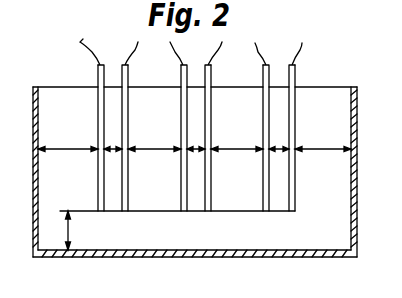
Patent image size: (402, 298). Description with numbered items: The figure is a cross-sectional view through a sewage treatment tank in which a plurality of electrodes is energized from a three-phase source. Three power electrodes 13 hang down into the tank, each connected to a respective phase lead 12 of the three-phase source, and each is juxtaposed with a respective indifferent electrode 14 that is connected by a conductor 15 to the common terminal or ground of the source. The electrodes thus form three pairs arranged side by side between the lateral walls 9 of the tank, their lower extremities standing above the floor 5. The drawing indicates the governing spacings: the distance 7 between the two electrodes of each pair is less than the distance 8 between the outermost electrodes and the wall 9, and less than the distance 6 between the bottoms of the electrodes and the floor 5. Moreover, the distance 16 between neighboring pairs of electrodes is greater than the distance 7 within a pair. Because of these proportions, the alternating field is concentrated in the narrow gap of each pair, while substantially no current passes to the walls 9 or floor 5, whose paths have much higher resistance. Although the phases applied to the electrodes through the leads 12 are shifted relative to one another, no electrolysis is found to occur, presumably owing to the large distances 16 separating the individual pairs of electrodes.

The floor 5 is at (110, 258).
The distance 6 is at (72, 230).
The distance 7 is at (277, 164).
The distance 8 is at (69, 150).
The lateral walls 9 is at (31, 243).
The phase leads 12 is at (130, 54).
The power electrodes 13 is at (128, 118).
The indifferent electrodes 14 is at (97, 112).
The conductors 15 is at (92, 52).
The distance 16 is at (150, 150).